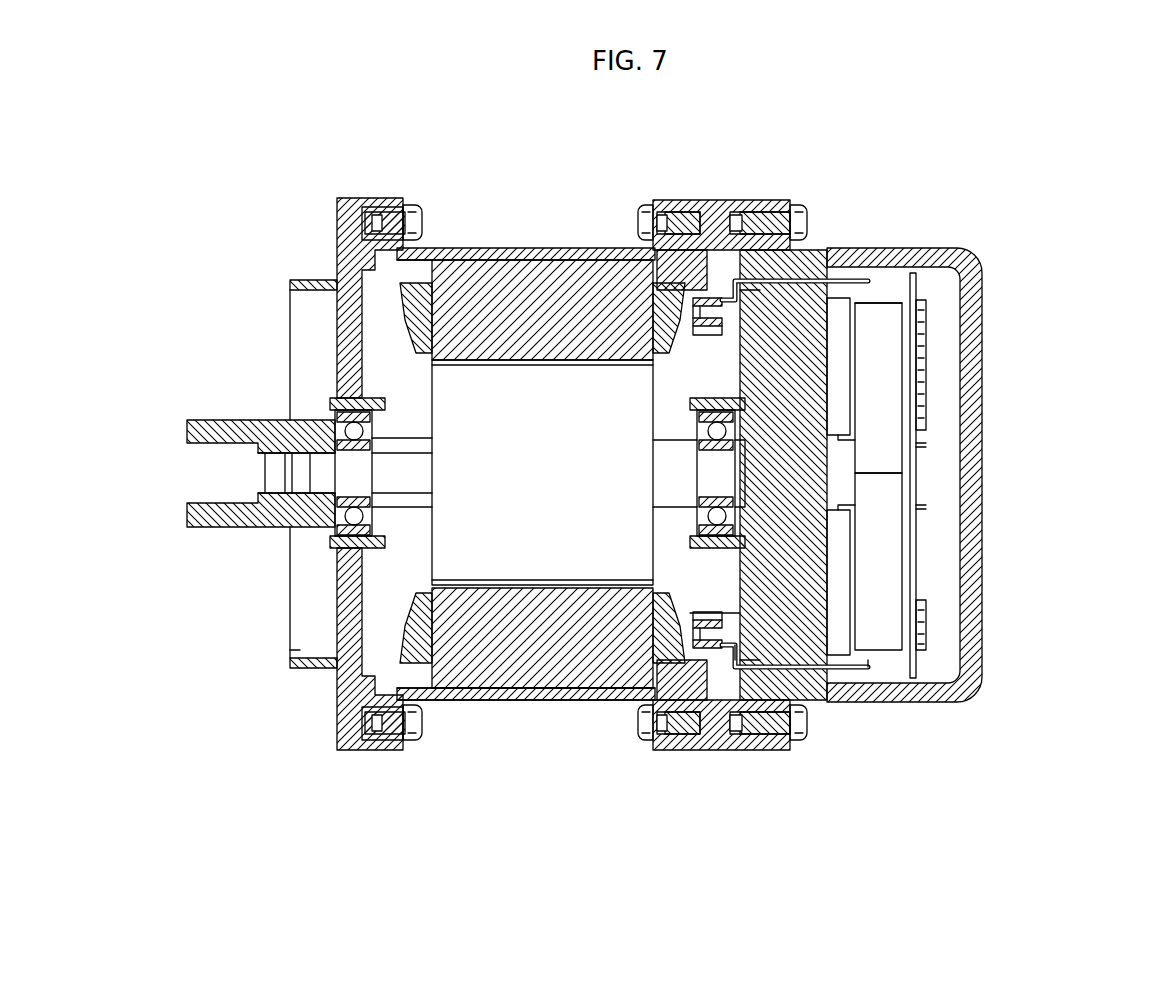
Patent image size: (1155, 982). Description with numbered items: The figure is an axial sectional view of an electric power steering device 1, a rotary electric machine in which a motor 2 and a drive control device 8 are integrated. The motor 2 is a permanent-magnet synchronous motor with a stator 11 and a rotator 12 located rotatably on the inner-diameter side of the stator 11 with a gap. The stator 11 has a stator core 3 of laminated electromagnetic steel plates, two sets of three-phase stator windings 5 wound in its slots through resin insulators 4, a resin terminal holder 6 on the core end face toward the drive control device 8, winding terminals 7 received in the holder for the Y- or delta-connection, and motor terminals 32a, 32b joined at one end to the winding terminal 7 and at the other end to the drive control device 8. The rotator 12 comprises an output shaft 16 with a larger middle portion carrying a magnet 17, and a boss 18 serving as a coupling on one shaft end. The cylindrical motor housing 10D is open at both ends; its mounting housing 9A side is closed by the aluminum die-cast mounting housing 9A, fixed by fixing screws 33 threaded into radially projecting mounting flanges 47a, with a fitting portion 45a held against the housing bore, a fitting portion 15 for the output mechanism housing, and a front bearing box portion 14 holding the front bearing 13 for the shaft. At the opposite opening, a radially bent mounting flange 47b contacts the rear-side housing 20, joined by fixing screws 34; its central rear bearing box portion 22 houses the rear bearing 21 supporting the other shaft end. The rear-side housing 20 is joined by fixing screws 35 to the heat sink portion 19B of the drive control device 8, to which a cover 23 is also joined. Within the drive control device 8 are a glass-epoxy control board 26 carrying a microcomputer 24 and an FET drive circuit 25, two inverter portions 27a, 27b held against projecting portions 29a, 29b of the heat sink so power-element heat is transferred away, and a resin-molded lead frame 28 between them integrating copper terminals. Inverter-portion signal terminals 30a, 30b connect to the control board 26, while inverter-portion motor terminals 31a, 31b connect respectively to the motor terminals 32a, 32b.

The electric power steering device 1 is at (637, 790).
The motor 2 is at (532, 730).
The stator core 3 is at (580, 702).
The insulators 4 is at (336, 752).
The stator windings 5 is at (485, 702).
The terminal holder 6 is at (727, 702).
The winding terminals 7 is at (748, 702).
The drive control device 8 is at (958, 712).
The mounting housing 9A is at (372, 745).
The motor housing 10D is at (578, 248).
The stator 11 is at (521, 313).
The rotator 12 is at (470, 437).
The front bearing 13 is at (350, 398).
The front bearing box portion 14 is at (335, 547).
The fitting portion 15 is at (303, 667).
The output shaft 16 is at (390, 450).
The magnet 17 is at (606, 437).
The boss 18 is at (215, 522).
The heat sink portion 19B is at (812, 702).
The rear-side housing 20 is at (738, 218).
The rear bearing 21 is at (700, 408).
The rear bearing box portion 22 is at (745, 250).
The cover 23 is at (900, 703).
The microcomputer 24 is at (944, 258).
The FET drive circuit 25 is at (915, 622).
The control board 26 is at (913, 495).
The inverter portion 27a is at (840, 567).
The inverter portion 27b is at (845, 415).
The lead frame 28 is at (880, 357).
The projecting portion 29a is at (826, 555).
The projecting portion 29b is at (827, 395).
The inverter-portion signal terminal 30a is at (920, 507).
The inverter-portion signal terminal 30b is at (920, 447).
The inverter-portion motor terminal 31a is at (925, 703).
The inverter-portion motor terminal 31b is at (895, 258).
The motor terminal 32a is at (863, 703).
The motor terminal 32b is at (853, 258).
The fixing screws 33 is at (418, 205).
The fixing screws 34 is at (644, 213).
The fixing screws 35 is at (800, 215).
The fitting portion 45a is at (437, 702).
The mounting flanges 47a is at (402, 200).
The mounting flange 47b is at (668, 200).